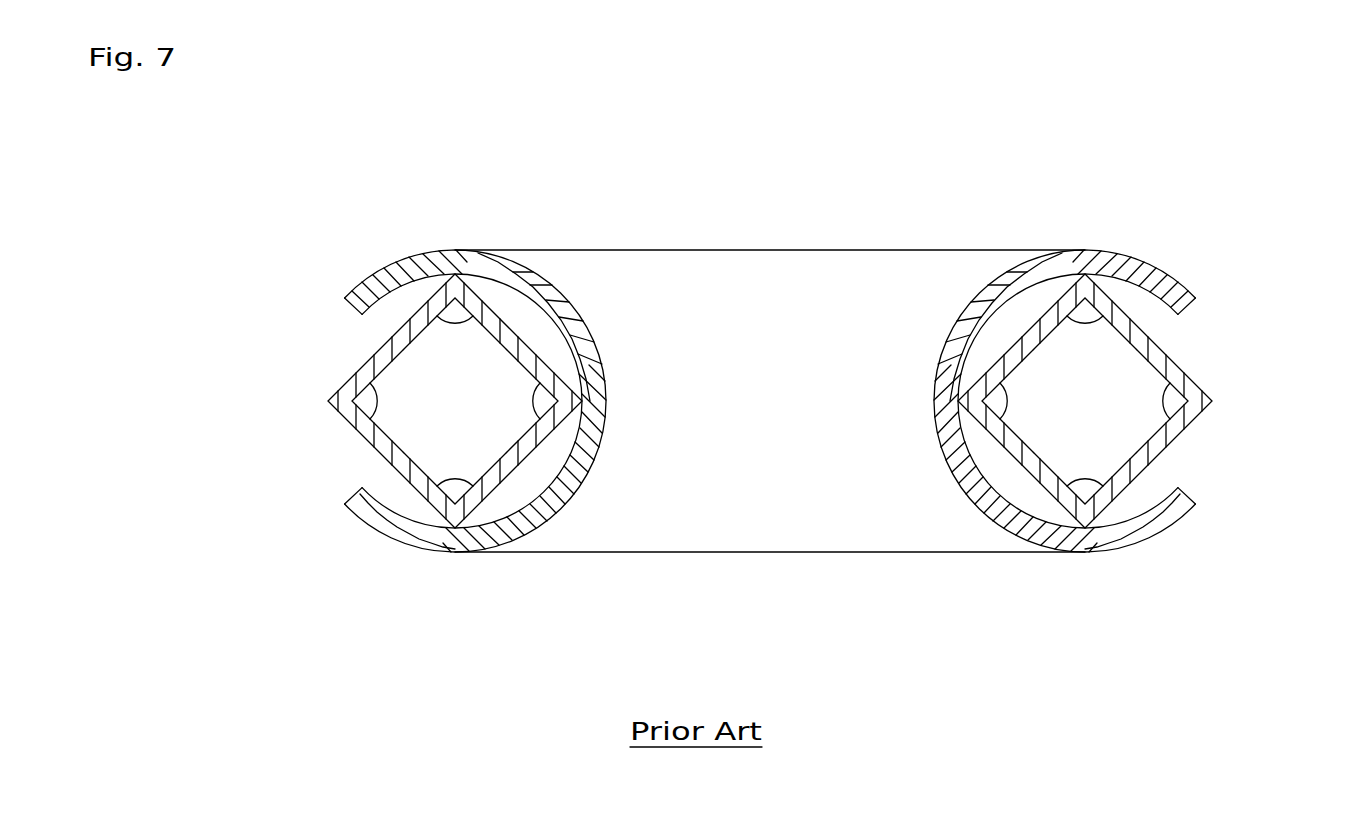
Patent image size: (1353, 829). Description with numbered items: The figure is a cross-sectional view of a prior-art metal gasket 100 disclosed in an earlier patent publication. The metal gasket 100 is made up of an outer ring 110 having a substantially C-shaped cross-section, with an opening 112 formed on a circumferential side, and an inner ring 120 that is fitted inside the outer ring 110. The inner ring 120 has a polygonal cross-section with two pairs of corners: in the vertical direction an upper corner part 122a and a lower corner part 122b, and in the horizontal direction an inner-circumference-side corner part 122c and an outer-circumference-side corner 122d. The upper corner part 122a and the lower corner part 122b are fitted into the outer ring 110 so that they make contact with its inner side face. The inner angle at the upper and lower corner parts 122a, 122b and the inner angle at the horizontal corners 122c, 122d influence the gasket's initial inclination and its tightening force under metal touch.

The metal gasket 100 is at (1207, 158).
The outer ring 110 is at (381, 264).
The opening 112 is at (350, 304).
The inner ring 120 is at (345, 452).
The upper corner part 122a is at (457, 272).
The lower corner part 122b is at (454, 528).
The inner-circumference-side corner part 122c is at (590, 406).
The outer-circumference-side corner 122d is at (330, 401).